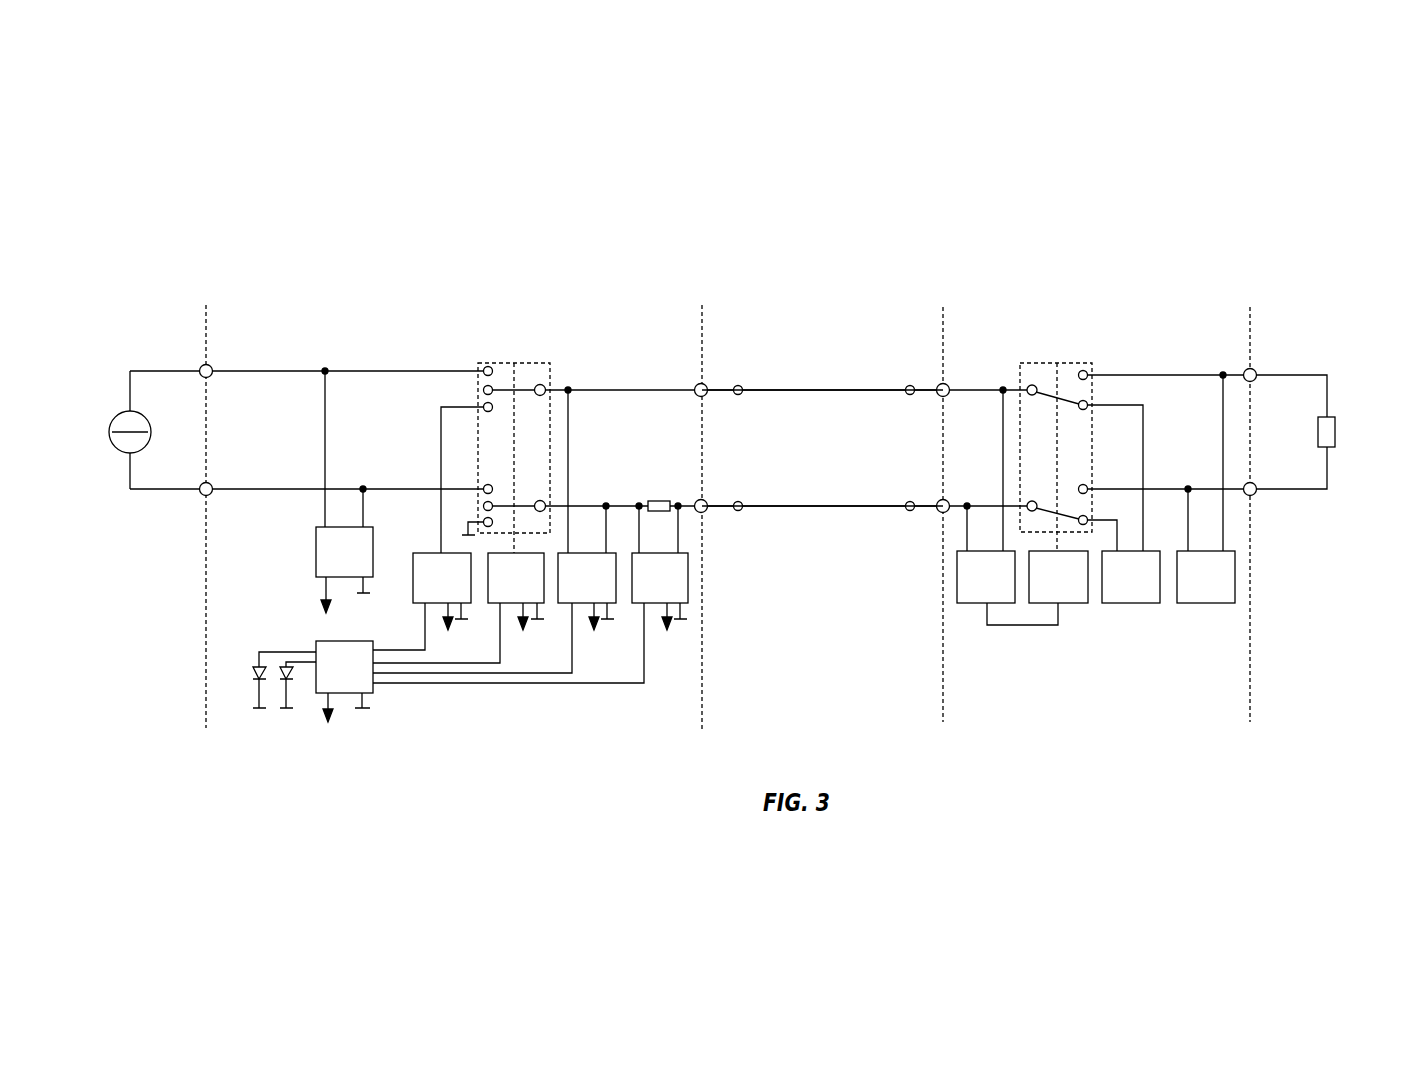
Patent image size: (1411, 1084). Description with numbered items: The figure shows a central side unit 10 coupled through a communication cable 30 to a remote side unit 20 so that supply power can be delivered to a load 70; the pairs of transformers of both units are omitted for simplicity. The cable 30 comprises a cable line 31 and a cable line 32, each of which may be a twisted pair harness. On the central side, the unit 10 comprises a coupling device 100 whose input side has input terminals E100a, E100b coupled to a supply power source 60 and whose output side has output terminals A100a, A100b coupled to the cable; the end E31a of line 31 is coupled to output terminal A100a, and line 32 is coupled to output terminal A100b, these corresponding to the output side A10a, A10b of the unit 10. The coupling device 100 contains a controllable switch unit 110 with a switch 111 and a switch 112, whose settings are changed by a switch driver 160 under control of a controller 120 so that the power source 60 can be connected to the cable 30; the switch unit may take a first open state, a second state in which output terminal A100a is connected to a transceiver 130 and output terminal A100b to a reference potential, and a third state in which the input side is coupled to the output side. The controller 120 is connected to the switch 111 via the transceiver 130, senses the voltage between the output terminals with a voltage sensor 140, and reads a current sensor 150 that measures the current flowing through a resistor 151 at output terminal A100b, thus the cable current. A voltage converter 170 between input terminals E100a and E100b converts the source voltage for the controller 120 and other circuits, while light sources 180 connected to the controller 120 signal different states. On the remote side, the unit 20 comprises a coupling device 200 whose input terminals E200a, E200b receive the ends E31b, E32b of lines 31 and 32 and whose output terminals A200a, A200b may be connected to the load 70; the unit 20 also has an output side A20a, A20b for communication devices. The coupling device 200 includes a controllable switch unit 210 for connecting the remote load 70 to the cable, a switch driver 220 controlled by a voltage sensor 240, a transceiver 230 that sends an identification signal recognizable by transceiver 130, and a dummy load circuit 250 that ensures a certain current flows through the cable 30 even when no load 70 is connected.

The central side unit 10 is at (470, 250).
The remote side unit 20 is at (1082, 266).
The communication cable 30 is at (899, 320).
The cable line 31 is at (808, 388).
The cable line 32 is at (808, 510).
The supply power source 60 is at (113, 452).
The load 70 is at (1335, 425).
The coupling device 100 is at (545, 285).
The controllable switch unit 110 is at (526, 420).
The switch 111 is at (510, 378).
The switch 112 is at (522, 490).
The controller 120 is at (344, 681).
The transceiver 130 is at (422, 601).
The voltage sensor 140 is at (494, 613).
The current sensor 150 is at (530, 618).
The resistor 151 is at (693, 500).
The switch driver 160 is at (458, 608).
The voltage converter 170 is at (344, 570).
The light sources 180 is at (253, 683).
The coupling device 200 is at (1177, 311).
The controllable switch unit 210 is at (1053, 358).
The switch driver 220 is at (1058, 577).
The transceiver 230 is at (1131, 577).
The voltage sensor 240 is at (1007, 588).
The dummy load circuit 250 is at (1206, 577).
The input terminal E100a is at (212, 363).
The input terminal E100b is at (209, 497).
The output terminal A100a is at (698, 385).
The output terminal A100b is at (673, 473).
The cable line end E31a is at (738, 385).
The cable line end E31b is at (910, 385).
The cable line end E32b is at (740, 501).
The output side terminal A10a is at (736, 395).
The output side terminal A10b is at (737, 511).
The output side terminal A20a is at (908, 395).
The output side terminal A20b is at (908, 511).
The input terminal E200a is at (948, 385).
The input terminal E200b is at (948, 500).
The output terminal A200a is at (1253, 370).
The output terminal A200b is at (1253, 495).